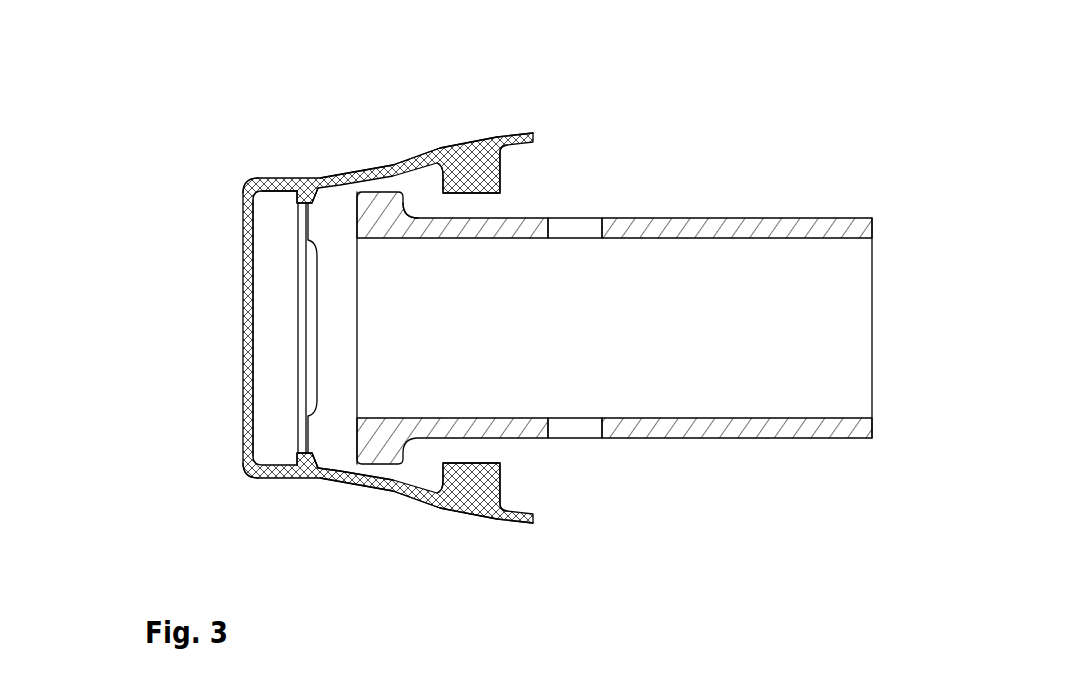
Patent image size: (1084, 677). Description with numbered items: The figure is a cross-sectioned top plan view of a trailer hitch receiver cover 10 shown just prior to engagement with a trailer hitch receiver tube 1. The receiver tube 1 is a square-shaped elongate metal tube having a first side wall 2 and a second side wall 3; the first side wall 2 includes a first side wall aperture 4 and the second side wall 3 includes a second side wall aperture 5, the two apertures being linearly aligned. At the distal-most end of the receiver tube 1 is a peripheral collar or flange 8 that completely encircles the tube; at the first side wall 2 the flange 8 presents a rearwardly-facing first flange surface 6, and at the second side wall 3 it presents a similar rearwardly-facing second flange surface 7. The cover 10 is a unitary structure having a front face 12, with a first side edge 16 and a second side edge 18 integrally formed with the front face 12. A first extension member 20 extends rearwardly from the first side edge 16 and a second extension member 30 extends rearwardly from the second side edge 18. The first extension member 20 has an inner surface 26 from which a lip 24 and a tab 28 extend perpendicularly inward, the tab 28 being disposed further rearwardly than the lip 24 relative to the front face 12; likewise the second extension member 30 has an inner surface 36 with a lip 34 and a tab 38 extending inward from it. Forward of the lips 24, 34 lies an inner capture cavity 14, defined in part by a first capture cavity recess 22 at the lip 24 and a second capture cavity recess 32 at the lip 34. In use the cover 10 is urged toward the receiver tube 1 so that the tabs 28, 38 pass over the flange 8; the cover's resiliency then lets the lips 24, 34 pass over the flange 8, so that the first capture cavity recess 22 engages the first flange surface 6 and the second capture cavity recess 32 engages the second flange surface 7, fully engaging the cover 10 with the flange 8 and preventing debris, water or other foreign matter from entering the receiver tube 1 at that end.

The trailer hitch receiver tube 1 is at (845, 340).
The first side wall 2 is at (790, 226).
The second side wall 3 is at (748, 430).
The first side wall aperture 4 is at (572, 228).
The second side wall aperture 5 is at (582, 432).
The first flange surface 6 is at (403, 205).
The second flange surface 7 is at (404, 452).
The flange 8 is at (378, 200).
The trailer hitch receiver cover 10 is at (132, 66).
The front face 12 is at (243, 312).
The inner capture cavity 14 is at (277, 373).
The first side edge 16 is at (258, 180).
The second side edge 18 is at (252, 471).
The first extension member 20 is at (415, 160).
The first capture cavity recess 22 is at (278, 202).
The lip 24 is at (308, 188).
The inner surface 26 is at (343, 183).
The tab 28 is at (482, 168).
The second extension member 30 is at (390, 490).
The second capture cavity recess 32 is at (282, 459).
The lip 34 is at (307, 463).
The inner surface 36 is at (335, 470).
The tab 38 is at (488, 487).